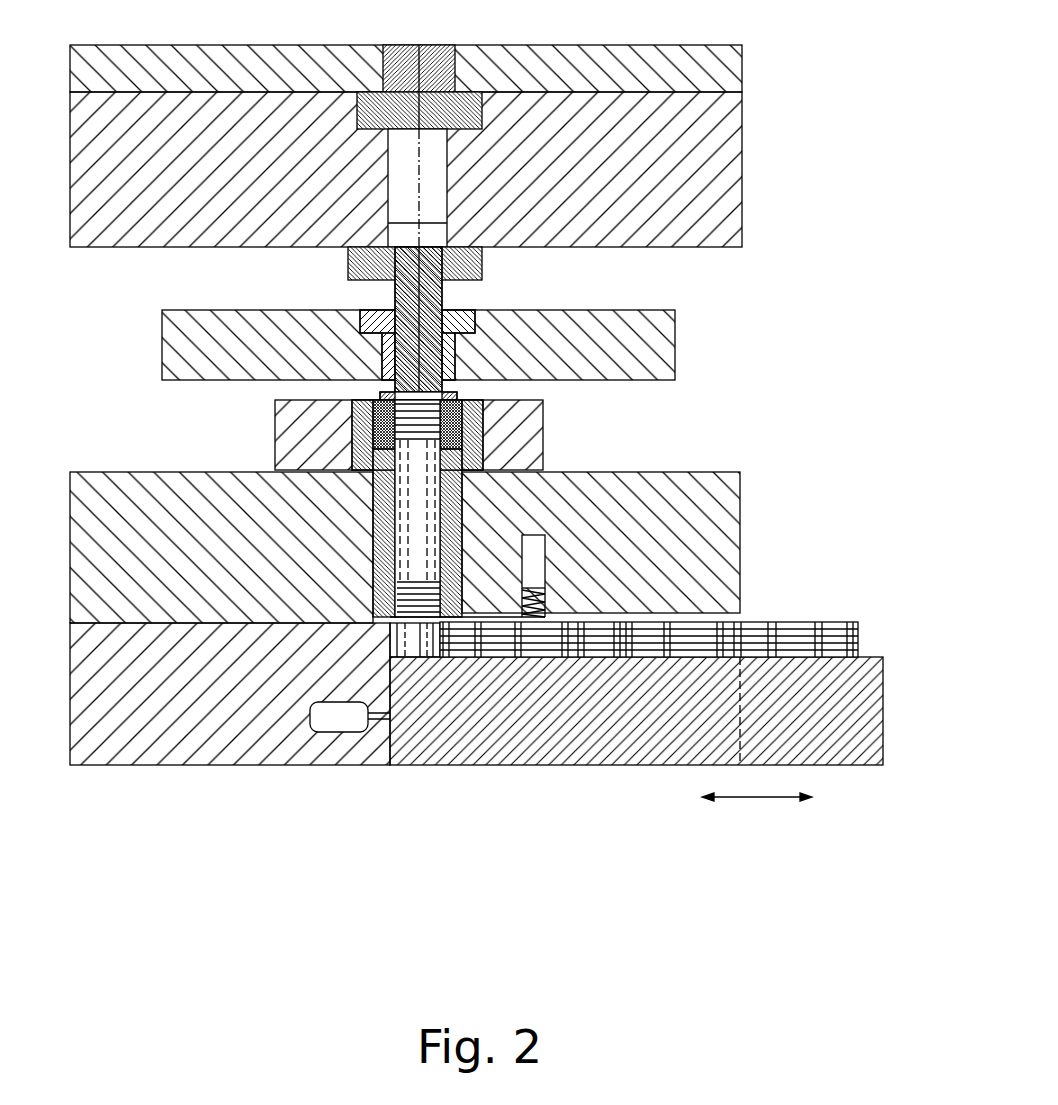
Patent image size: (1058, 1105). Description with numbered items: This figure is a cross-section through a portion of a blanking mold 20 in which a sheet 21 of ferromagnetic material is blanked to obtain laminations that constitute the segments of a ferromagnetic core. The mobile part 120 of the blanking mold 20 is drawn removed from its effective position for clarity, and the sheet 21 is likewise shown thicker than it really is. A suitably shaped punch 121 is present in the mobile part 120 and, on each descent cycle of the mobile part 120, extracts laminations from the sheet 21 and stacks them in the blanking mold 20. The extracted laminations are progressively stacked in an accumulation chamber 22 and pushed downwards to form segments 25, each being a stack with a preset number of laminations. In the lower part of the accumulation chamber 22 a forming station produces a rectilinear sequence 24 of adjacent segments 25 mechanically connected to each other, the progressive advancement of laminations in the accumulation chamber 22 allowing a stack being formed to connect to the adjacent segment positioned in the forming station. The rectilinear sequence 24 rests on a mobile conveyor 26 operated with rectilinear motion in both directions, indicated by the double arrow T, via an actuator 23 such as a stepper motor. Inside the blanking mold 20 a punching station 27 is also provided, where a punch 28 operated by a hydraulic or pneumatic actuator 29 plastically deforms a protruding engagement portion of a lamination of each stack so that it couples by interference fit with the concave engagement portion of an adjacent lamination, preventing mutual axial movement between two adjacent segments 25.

The mobile part 120 is at (482, 222).
The punch 121 is at (405, 297).
The blanking mold 20 is at (486, 645).
The sheet 21 is at (383, 397).
The accumulation chamber 22 is at (418, 492).
The actuator 23 is at (330, 722).
The rectilinear sequence 24 is at (671, 583).
The segments 25 is at (835, 621).
The mobile conveyor 26 is at (596, 752).
The punching station 27 is at (642, 506).
The punch 28 is at (545, 622).
The hydraulic or pneumatic actuator 29 is at (540, 554).
The double arrow T is at (756, 800).